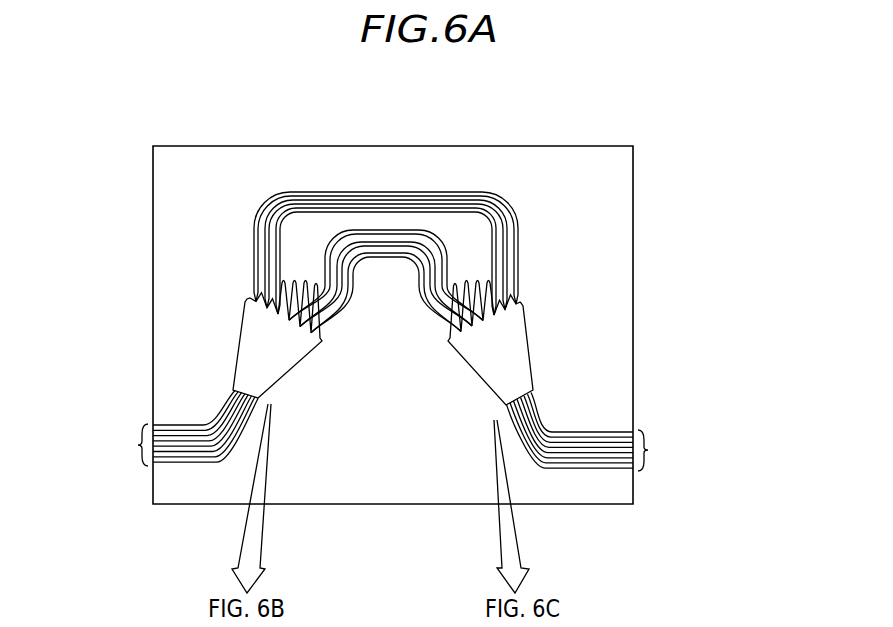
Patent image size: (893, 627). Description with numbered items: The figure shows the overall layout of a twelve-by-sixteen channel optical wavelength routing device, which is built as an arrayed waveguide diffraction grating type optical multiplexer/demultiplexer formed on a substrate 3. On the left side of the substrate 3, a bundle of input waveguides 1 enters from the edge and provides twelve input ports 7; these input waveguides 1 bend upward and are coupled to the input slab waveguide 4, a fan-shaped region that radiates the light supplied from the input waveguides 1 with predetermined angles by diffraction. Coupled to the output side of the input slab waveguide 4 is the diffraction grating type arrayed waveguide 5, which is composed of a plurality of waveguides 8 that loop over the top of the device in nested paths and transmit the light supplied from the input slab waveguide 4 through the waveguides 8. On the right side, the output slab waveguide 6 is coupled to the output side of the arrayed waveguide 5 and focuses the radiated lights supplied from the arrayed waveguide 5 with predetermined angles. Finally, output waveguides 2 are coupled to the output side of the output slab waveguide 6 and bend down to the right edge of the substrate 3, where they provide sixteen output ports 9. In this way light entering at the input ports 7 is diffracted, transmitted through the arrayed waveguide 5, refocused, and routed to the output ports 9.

The input waveguides 1 is at (190, 423).
The output waveguides 2 is at (597, 430).
The substrate 3 is at (578, 162).
The input slab waveguide 4 is at (252, 340).
The arrayed waveguide 5 is at (404, 270).
The output slab waveguide 6 is at (515, 343).
The input ports 7 is at (139, 444).
The waveguides 8 is at (326, 192).
The output ports 9 is at (648, 450).